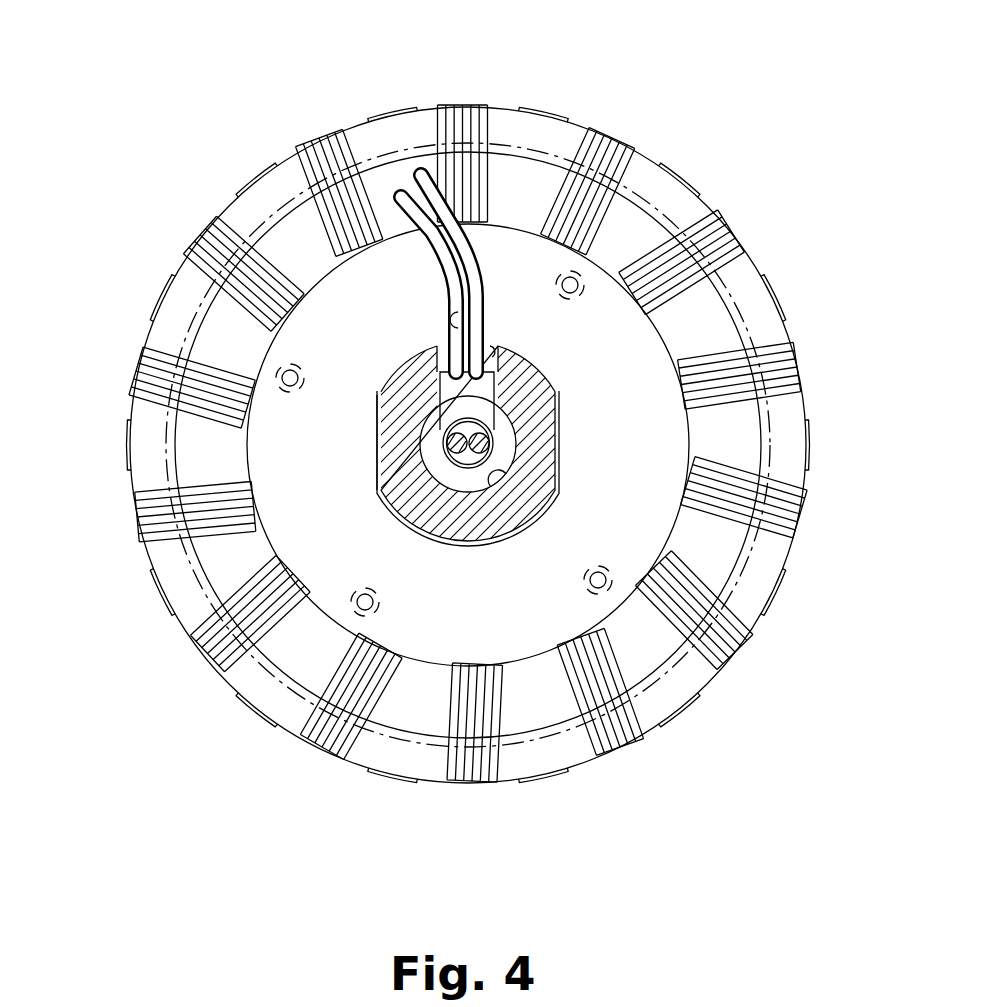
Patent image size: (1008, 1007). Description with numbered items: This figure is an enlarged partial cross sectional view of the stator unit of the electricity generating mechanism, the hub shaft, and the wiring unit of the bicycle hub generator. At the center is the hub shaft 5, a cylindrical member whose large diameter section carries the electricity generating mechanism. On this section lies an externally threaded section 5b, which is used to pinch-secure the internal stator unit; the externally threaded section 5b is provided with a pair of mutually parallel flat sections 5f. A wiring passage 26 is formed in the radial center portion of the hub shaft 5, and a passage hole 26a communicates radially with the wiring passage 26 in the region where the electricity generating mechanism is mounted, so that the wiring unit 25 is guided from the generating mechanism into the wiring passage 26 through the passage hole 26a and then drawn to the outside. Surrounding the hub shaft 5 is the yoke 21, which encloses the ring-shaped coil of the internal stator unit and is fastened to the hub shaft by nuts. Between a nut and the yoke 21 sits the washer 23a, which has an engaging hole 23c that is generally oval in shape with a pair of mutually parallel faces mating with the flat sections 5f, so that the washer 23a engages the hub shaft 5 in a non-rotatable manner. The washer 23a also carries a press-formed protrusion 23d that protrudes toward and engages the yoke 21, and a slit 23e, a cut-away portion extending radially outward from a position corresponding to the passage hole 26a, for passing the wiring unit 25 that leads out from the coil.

The hub shaft 5 is at (560, 372).
The externally threaded section 5b is at (540, 533).
The flat sections 5f is at (558, 423).
The yoke 21 is at (622, 230).
The washer 23a is at (273, 560).
The engaging hole 23c is at (377, 480).
The protrusion 23d is at (613, 580).
The slit 23e is at (450, 333).
The wiring unit 25 is at (463, 393).
The wiring passage 26 is at (503, 472).
The passage hole 26a is at (490, 340).